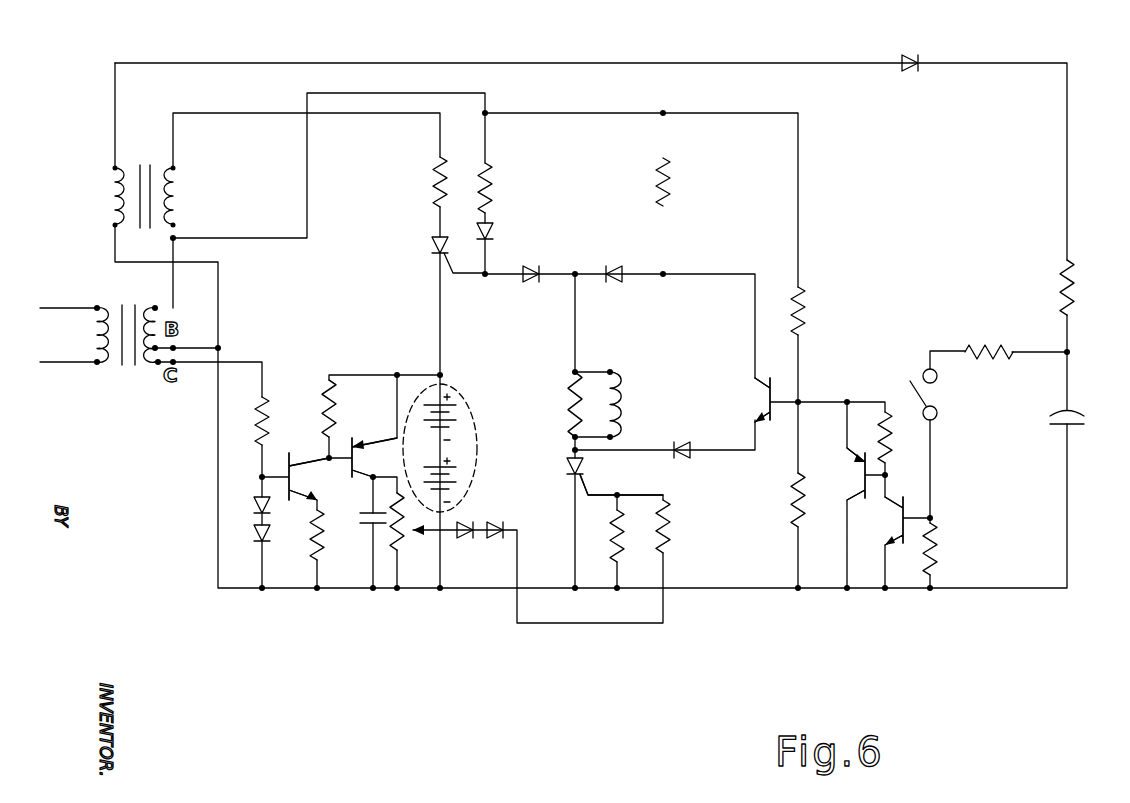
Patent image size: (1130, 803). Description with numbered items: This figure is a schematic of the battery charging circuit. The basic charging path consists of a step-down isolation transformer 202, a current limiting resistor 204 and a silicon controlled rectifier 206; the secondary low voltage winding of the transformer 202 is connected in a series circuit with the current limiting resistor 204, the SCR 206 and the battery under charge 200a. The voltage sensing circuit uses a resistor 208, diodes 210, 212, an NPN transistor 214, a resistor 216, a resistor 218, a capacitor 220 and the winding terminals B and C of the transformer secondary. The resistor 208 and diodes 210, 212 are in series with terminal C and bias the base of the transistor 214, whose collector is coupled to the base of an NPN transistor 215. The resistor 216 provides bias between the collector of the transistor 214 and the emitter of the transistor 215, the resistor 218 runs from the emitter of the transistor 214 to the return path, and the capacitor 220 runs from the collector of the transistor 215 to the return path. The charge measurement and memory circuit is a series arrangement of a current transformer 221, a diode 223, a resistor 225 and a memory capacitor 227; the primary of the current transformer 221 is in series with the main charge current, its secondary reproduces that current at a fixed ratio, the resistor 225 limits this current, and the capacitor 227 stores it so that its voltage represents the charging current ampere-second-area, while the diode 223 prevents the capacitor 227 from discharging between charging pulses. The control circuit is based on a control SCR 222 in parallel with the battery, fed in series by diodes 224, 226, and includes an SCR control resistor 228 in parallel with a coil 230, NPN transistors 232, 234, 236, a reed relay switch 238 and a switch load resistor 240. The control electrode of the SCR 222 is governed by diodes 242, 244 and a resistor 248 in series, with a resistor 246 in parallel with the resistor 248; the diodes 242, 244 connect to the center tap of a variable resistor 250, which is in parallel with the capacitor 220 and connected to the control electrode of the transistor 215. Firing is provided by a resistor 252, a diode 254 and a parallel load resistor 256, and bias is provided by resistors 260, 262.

The battery under charge 200a is at (460, 396).
The step-down isolation transformer 202 is at (129, 323).
The current limiting resistor 204 is at (434, 180).
The silicon controlled rectifier 206 is at (429, 244).
The resistor 208 is at (264, 398).
The diode 210 is at (255, 500).
The diode 212 is at (271, 530).
The NPN transistor 214 is at (306, 451).
The NPN transistor 215 is at (380, 404).
The resistor 216 is at (325, 407).
The resistor 218 is at (311, 514).
The capacitor 220 is at (366, 510).
The current transformer 221 is at (173, 166).
The control SCR 222 is at (568, 472).
The diode 223 is at (908, 60).
The diode 224 is at (523, 268).
The resistor 225 is at (1060, 284).
The diode 226 is at (600, 268).
The memory capacitor 227 is at (1052, 424).
The SCR control resistor 228 is at (570, 409).
The coil 230 is at (630, 387).
The NPN transistor 232 is at (770, 402).
The NPN transistor 234 is at (860, 470).
The NPN transistor 236 is at (897, 534).
The reed relay switch 238 is at (920, 368).
The switch load resistor 240 is at (972, 337).
The diode 242 is at (457, 537).
The diode 244 is at (500, 523).
The resistor 246 is at (611, 530).
The resistor 248 is at (672, 540).
The variable resistor 250 is at (406, 545).
The resistor 252 is at (491, 186).
The diode 254 is at (491, 233).
The parallel load resistor 256 is at (674, 180).
The resistor 260 is at (790, 500).
The resistor 262 is at (806, 303).